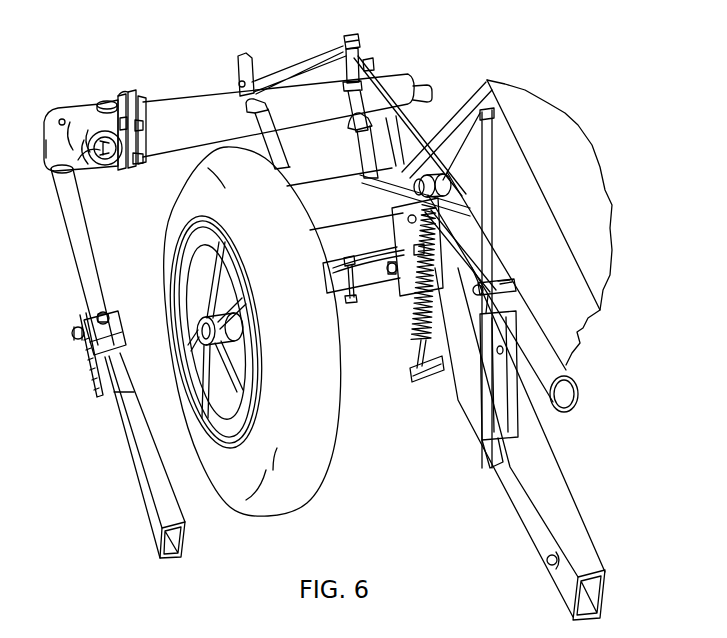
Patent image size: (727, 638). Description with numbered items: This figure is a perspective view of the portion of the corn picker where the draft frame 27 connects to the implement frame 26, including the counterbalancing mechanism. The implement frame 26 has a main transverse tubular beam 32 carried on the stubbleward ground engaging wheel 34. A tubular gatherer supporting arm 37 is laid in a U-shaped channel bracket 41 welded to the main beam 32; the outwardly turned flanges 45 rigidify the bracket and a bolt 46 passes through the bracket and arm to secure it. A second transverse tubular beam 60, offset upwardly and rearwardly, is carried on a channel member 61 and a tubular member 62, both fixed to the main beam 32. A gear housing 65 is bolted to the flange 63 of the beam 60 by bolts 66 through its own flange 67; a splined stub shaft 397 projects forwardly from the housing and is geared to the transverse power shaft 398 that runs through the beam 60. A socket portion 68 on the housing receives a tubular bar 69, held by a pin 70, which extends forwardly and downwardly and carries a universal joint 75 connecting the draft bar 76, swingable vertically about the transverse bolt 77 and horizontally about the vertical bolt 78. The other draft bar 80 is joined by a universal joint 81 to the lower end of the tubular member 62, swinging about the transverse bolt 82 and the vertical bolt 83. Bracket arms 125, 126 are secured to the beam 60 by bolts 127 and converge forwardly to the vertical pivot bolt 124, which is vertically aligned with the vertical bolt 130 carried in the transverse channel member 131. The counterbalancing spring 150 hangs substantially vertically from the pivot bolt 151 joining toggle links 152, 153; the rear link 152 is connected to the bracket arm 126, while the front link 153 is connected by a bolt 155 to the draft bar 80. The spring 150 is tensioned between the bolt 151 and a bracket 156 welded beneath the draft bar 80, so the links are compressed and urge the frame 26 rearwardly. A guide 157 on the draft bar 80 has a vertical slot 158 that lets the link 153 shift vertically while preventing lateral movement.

The main supporting frame 26 is at (446, 132).
The draft frame 27 is at (116, 491).
The main transverse tubular supporting beam 32 is at (332, 178).
The ground engaging wheel 34 is at (299, 490).
The gatherer supporting arm 37 is at (568, 368).
The supporting bracket 41 is at (520, 296).
The flanges 45 is at (393, 190).
The bolt 46 is at (404, 221).
The second transverse tubular frame beam 60 is at (172, 103).
The outer support member 61 is at (273, 140).
The tubular support member 62 is at (352, 126).
The flange 63 is at (142, 104).
The gear housing 65 is at (80, 106).
The bolts 66 is at (116, 97).
The flange 67 is at (131, 90).
The socket portion 68 is at (46, 146).
The tubular bar 69 is at (73, 226).
The pin 70 is at (60, 119).
The universal joint 75 is at (73, 363).
The draft bar 76 is at (116, 414).
The transverse pivot bolt 77 is at (72, 330).
The vertical bolt 78 is at (105, 311).
The draft bar 80 is at (466, 394).
The universal joint 81 is at (404, 302).
The transverse pivot bolt 82 is at (386, 275).
The vertical pivot bolt 83 is at (360, 256).
The pivot bolt 124 is at (358, 37).
The bracket arm 125 is at (275, 70).
The bracket arm 126 is at (342, 66).
The bolts 127 is at (238, 84).
The vertical bolt 130 is at (330, 300).
The transverse channel member 131 is at (336, 286).
The counterbalancing spring 150 is at (420, 322).
The pivot bolt 151 is at (452, 186).
The rear toggle link 152 is at (405, 135).
The front toggle link 153 is at (470, 252).
The bolt 155 is at (549, 564).
The bracket 156 is at (424, 388).
The guide 157 is at (483, 442).
The slot 158 is at (502, 352).
The splined stub shaft 397 is at (108, 164).
The transverse power shaft 398 is at (425, 92).